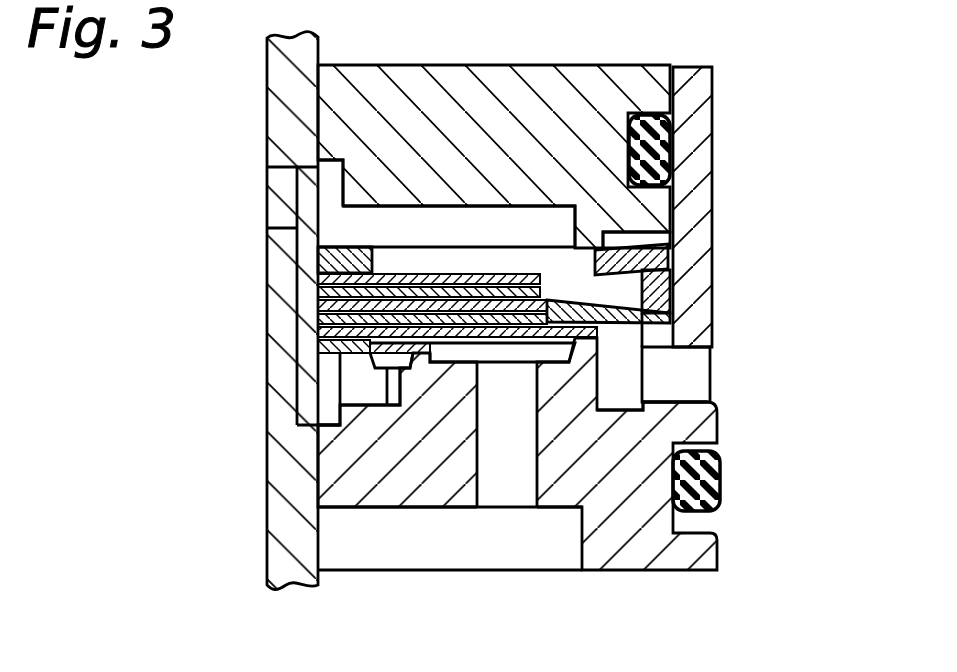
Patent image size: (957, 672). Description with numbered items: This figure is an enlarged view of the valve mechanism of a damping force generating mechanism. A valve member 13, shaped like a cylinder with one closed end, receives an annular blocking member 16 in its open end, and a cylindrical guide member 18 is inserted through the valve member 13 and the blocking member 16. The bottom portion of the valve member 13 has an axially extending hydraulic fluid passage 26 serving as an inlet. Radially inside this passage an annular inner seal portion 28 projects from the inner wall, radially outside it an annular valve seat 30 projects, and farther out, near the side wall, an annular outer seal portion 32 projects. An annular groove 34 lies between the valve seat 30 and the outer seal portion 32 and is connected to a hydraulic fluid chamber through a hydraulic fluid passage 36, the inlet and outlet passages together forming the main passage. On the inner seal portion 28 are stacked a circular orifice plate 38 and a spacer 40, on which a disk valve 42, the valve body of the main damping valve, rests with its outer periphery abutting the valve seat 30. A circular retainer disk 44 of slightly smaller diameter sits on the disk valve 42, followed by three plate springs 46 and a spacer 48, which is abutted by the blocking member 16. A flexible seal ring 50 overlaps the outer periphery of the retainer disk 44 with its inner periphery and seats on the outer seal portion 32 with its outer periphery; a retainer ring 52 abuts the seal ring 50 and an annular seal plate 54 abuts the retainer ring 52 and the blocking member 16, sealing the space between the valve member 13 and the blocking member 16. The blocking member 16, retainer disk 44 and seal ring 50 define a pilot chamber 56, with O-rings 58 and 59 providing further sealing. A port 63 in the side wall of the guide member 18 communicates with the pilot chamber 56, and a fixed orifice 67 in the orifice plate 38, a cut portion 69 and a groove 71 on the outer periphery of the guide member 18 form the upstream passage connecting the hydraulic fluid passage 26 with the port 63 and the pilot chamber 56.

The valve member 13 is at (694, 549).
The annular blocking member 16 is at (590, 78).
The cylindrical guide member 18 is at (312, 586).
The hydraulic fluid passage 26 is at (533, 470).
The annular inner seal portion 28 is at (345, 365).
The annular valve seat 30 is at (580, 348).
The annular outer seal portion 32 is at (672, 333).
The annular groove 34 is at (612, 410).
The hydraulic fluid passage 36 is at (712, 401).
The circular orifice plate 38 is at (345, 352).
The spacer 40 is at (322, 345).
The disk valve 42 is at (598, 331).
The circular retainer disk 44 is at (320, 312).
The plate spring 46 is at (322, 270).
The spacer 48 is at (320, 250).
The flexible seal ring 50 is at (672, 322).
The retainer ring 52 is at (660, 290).
The annular seal plate 54 is at (655, 258).
The pilot chamber 56 is at (606, 241).
The O-ring 58 is at (719, 486).
The O-ring 59 is at (662, 130).
The port 63 is at (280, 170).
The fixed orifice 67 is at (385, 398).
The cut portion 69 is at (390, 368).
The groove 71 is at (363, 395).